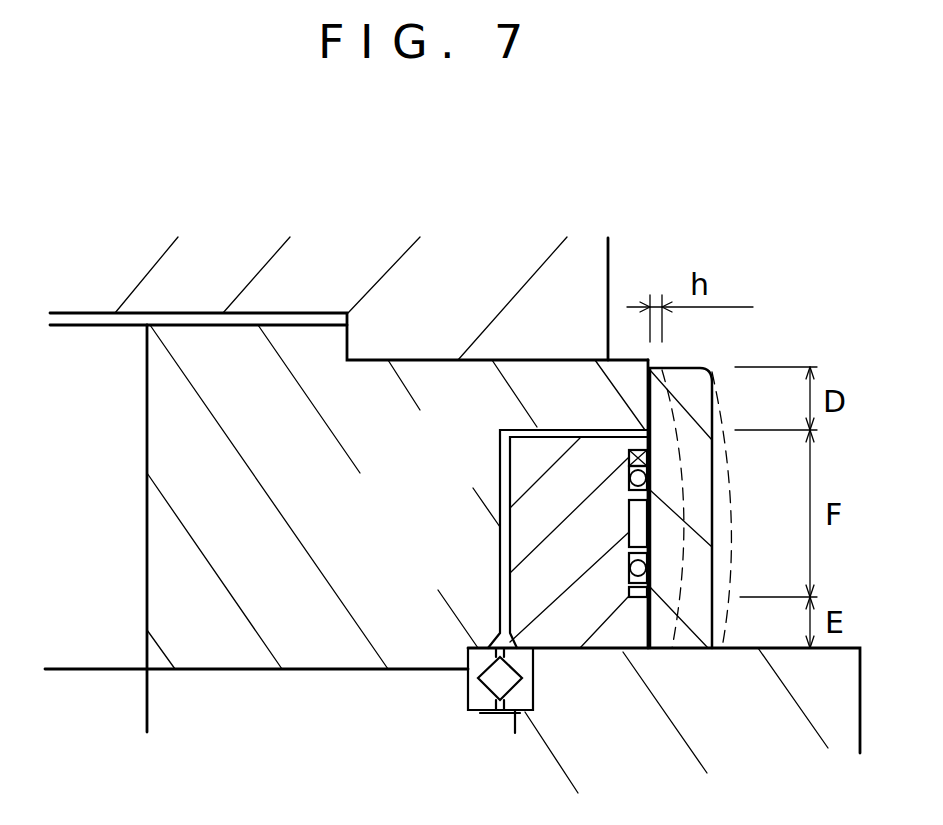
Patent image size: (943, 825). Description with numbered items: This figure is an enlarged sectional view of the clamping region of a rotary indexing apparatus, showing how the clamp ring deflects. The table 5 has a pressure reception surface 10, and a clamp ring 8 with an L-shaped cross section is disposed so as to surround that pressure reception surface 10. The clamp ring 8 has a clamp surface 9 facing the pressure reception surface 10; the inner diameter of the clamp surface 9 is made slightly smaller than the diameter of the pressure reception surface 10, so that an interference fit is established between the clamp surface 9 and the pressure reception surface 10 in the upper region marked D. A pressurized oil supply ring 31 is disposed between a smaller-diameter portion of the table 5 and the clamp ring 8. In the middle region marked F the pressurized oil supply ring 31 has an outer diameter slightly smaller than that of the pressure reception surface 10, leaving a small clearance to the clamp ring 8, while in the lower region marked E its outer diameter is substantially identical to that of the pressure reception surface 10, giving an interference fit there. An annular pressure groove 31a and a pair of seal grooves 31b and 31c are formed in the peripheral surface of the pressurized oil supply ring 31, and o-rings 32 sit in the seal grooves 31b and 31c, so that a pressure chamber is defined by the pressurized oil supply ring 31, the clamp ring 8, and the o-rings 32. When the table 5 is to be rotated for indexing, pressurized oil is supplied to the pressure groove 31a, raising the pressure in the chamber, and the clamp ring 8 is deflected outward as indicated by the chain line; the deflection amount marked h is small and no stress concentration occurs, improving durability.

The table 5 is at (418, 380).
The clamp ring 8 is at (663, 623).
The clamp surface 9 is at (648, 393).
The pressure reception surface 10 is at (653, 364).
The pressurized oil supply ring 31 is at (557, 555).
The pressure groove 31a is at (637, 520).
The seal groove 31b is at (630, 458).
The seal groove 31c is at (628, 593).
The o-rings 32 is at (650, 477).